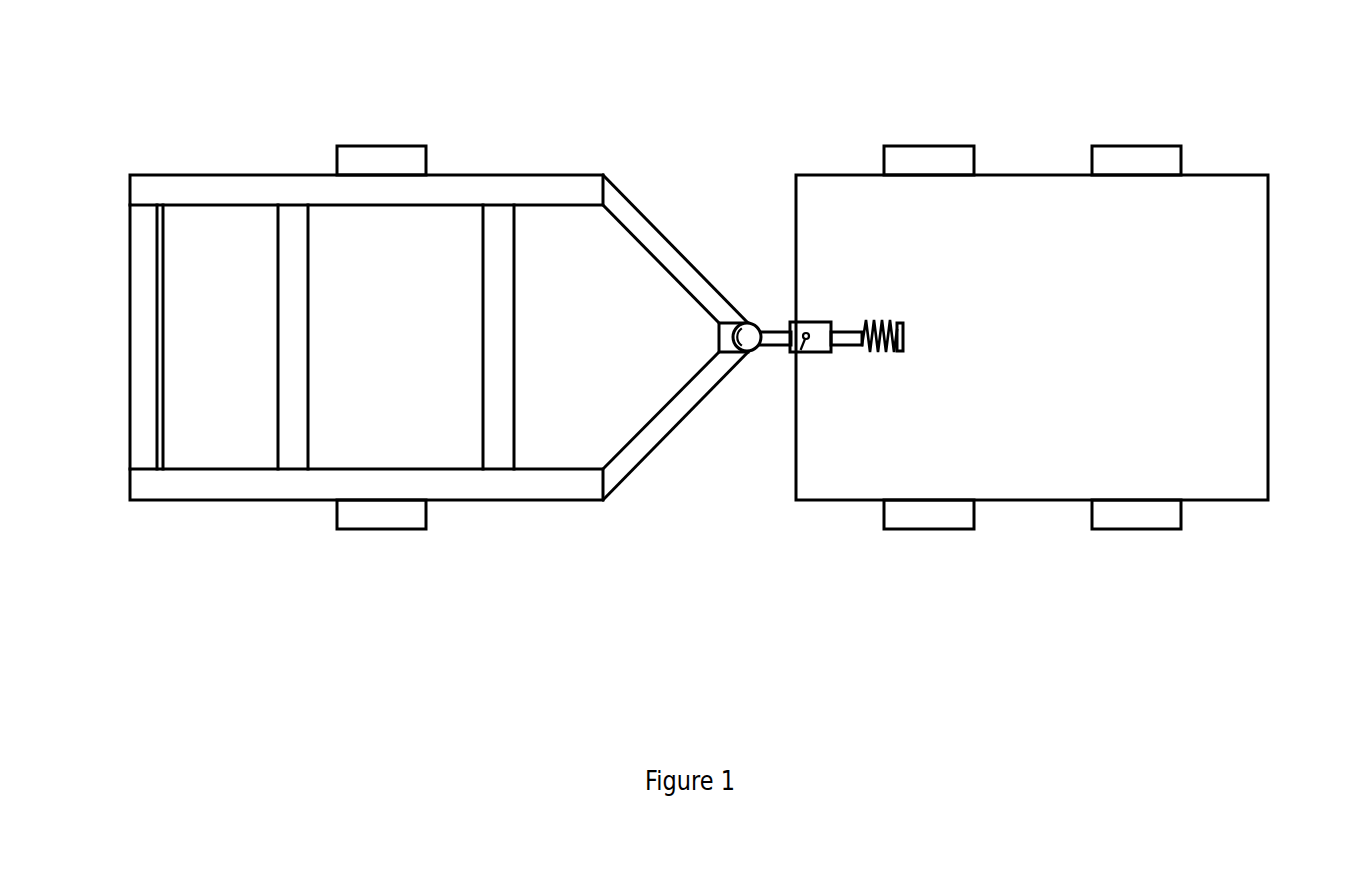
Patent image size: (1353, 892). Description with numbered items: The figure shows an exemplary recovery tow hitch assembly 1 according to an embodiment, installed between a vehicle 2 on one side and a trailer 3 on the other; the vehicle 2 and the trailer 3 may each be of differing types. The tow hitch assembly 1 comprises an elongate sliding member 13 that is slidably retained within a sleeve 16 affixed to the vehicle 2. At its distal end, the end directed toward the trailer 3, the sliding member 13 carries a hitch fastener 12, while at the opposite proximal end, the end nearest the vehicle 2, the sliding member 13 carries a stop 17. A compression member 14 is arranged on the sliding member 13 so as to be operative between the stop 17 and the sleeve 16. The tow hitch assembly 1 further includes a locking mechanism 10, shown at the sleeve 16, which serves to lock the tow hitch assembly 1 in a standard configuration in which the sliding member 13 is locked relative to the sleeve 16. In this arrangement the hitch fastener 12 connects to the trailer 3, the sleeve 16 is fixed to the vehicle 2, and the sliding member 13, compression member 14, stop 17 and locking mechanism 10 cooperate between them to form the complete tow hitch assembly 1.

The recovery tow hitch assembly 1 is at (766, 262).
The vehicle 2 is at (1268, 175).
The trailer 3 is at (130, 175).
The locking mechanism 10 is at (789, 356).
The hitch fastener 12 is at (718, 333).
The elongate sliding member 13 is at (843, 349).
The compression member 14 is at (873, 320).
The sleeve 16 is at (812, 322).
The stop 17 is at (902, 322).